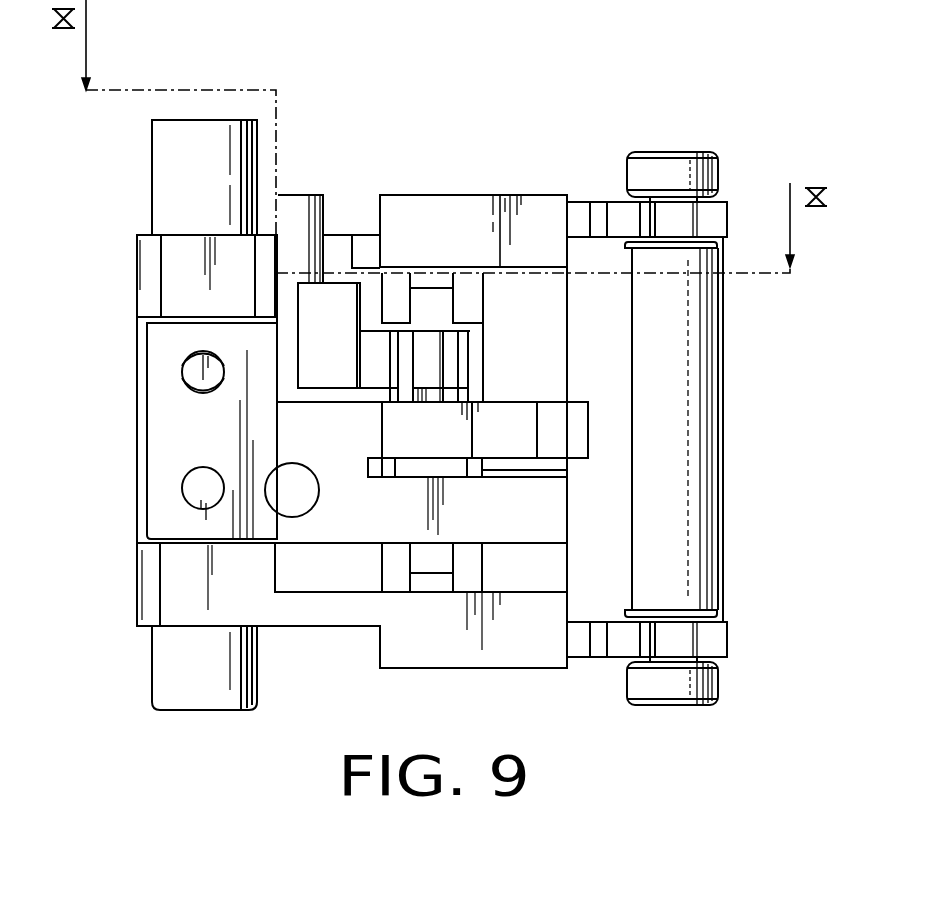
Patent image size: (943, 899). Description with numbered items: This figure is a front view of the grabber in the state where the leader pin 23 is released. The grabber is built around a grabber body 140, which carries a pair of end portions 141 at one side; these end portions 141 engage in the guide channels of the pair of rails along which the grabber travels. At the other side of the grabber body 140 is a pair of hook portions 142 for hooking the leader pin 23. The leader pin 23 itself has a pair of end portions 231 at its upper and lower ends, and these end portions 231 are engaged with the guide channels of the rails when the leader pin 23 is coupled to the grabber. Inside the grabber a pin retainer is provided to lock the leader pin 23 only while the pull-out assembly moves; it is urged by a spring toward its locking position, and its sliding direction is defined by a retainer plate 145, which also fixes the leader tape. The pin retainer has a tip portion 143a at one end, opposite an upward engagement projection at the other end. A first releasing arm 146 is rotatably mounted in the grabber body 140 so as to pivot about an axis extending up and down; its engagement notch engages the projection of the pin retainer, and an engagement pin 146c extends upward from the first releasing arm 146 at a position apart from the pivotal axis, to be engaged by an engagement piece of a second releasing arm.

The end portions 141 is at (150, 197).
The retainer plate 145 is at (168, 466).
The engagement pin 146c is at (295, 200).
The first releasing arm 146 is at (327, 207).
The grabber body 140 is at (442, 197).
The tip portion 143a is at (590, 425).
The leader pin 23 is at (703, 417).
The hook portions 142 is at (717, 218).
The end portions 231 is at (675, 152).